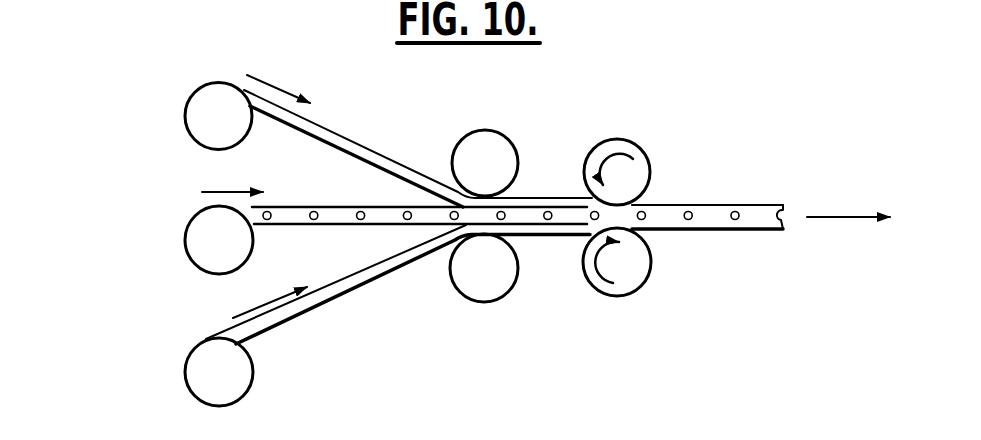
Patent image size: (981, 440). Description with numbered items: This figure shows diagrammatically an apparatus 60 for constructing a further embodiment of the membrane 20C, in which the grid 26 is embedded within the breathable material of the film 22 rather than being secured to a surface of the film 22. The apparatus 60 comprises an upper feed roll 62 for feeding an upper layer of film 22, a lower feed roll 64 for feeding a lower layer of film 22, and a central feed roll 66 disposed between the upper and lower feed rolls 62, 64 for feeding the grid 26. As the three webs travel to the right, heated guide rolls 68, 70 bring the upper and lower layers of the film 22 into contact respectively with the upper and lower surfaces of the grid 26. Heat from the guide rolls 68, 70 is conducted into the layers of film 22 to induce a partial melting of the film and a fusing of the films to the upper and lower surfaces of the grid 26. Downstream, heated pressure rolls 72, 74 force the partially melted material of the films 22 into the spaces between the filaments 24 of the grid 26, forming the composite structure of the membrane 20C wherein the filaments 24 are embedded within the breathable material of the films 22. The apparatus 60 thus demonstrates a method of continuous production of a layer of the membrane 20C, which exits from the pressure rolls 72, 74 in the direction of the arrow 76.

The apparatus 60 is at (560, 302).
The upper feed roll 62 is at (233, 127).
The lower feed roll 64 is at (234, 390).
The central feed roll 66 is at (234, 258).
The film 22 is at (318, 121).
The grid 26 is at (327, 203).
The filaments 24 is at (739, 210).
The membrane 20C is at (702, 231).
The heated guide roll 68 is at (507, 138).
The heated guide roll 70 is at (500, 300).
The heated pressure roll 72 is at (627, 142).
The heated pressure roll 74 is at (645, 282).
The arrow 76 is at (833, 217).